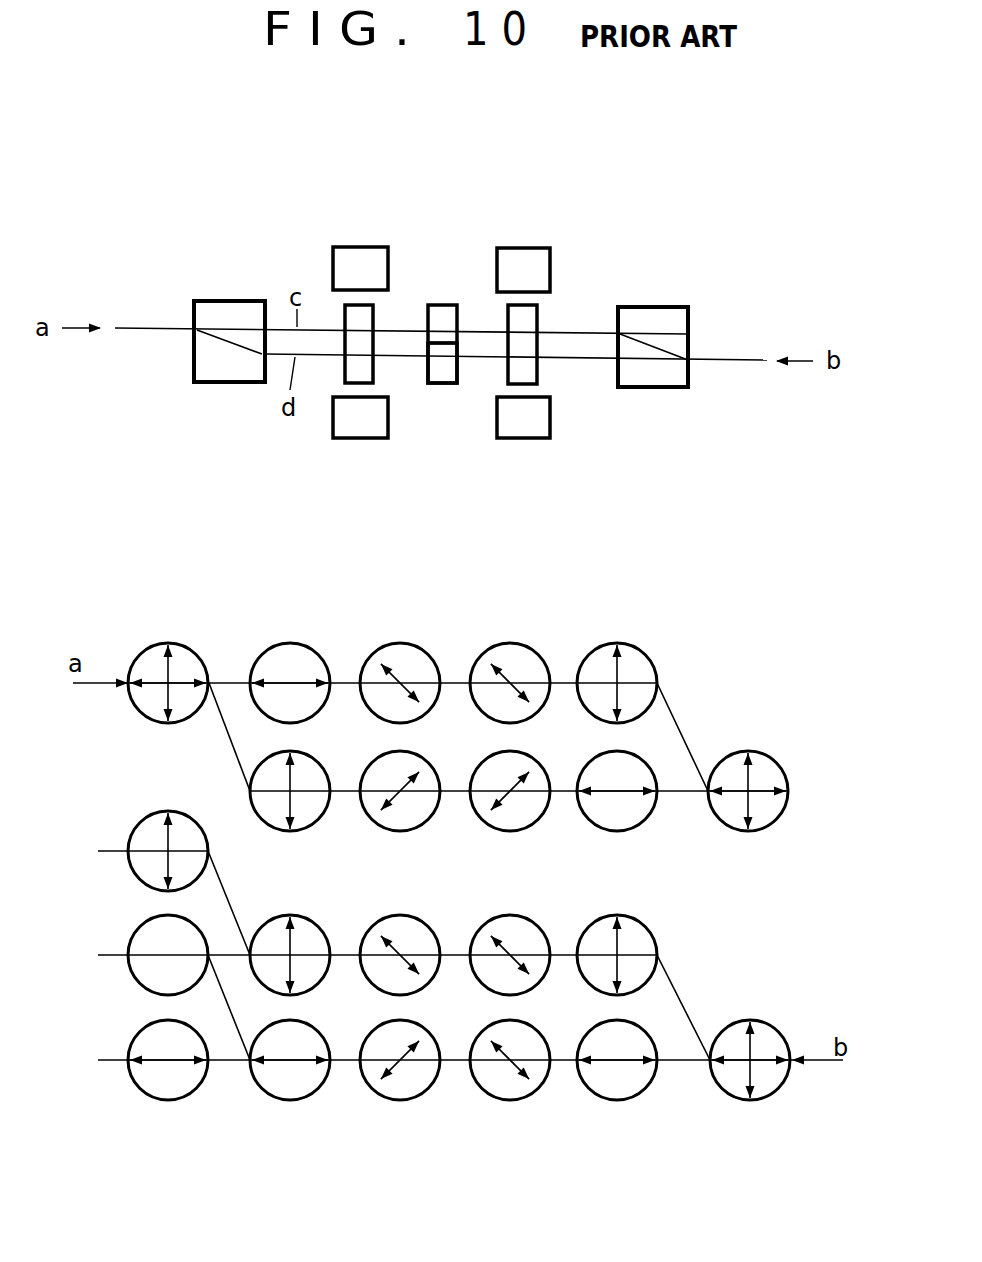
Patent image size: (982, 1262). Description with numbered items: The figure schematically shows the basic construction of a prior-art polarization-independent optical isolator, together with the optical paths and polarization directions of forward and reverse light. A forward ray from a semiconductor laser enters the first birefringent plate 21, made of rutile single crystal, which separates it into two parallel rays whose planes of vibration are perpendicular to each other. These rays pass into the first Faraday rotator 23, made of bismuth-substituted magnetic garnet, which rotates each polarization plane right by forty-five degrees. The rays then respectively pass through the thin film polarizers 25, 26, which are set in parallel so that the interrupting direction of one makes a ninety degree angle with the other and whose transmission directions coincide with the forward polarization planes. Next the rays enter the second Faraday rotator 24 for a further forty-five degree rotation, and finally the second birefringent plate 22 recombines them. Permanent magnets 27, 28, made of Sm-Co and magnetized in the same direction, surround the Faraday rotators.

The first birefringent plate 21 is at (210, 300).
The second birefringent plate 22 is at (670, 307).
The first Faraday rotator 23 is at (345, 316).
The second Faraday rotator 24 is at (537, 323).
The polarizer 25 is at (447, 312).
The polarizer 26 is at (443, 373).
The permanent magnet 27 is at (352, 247).
The permanent magnet 28 is at (523, 248).